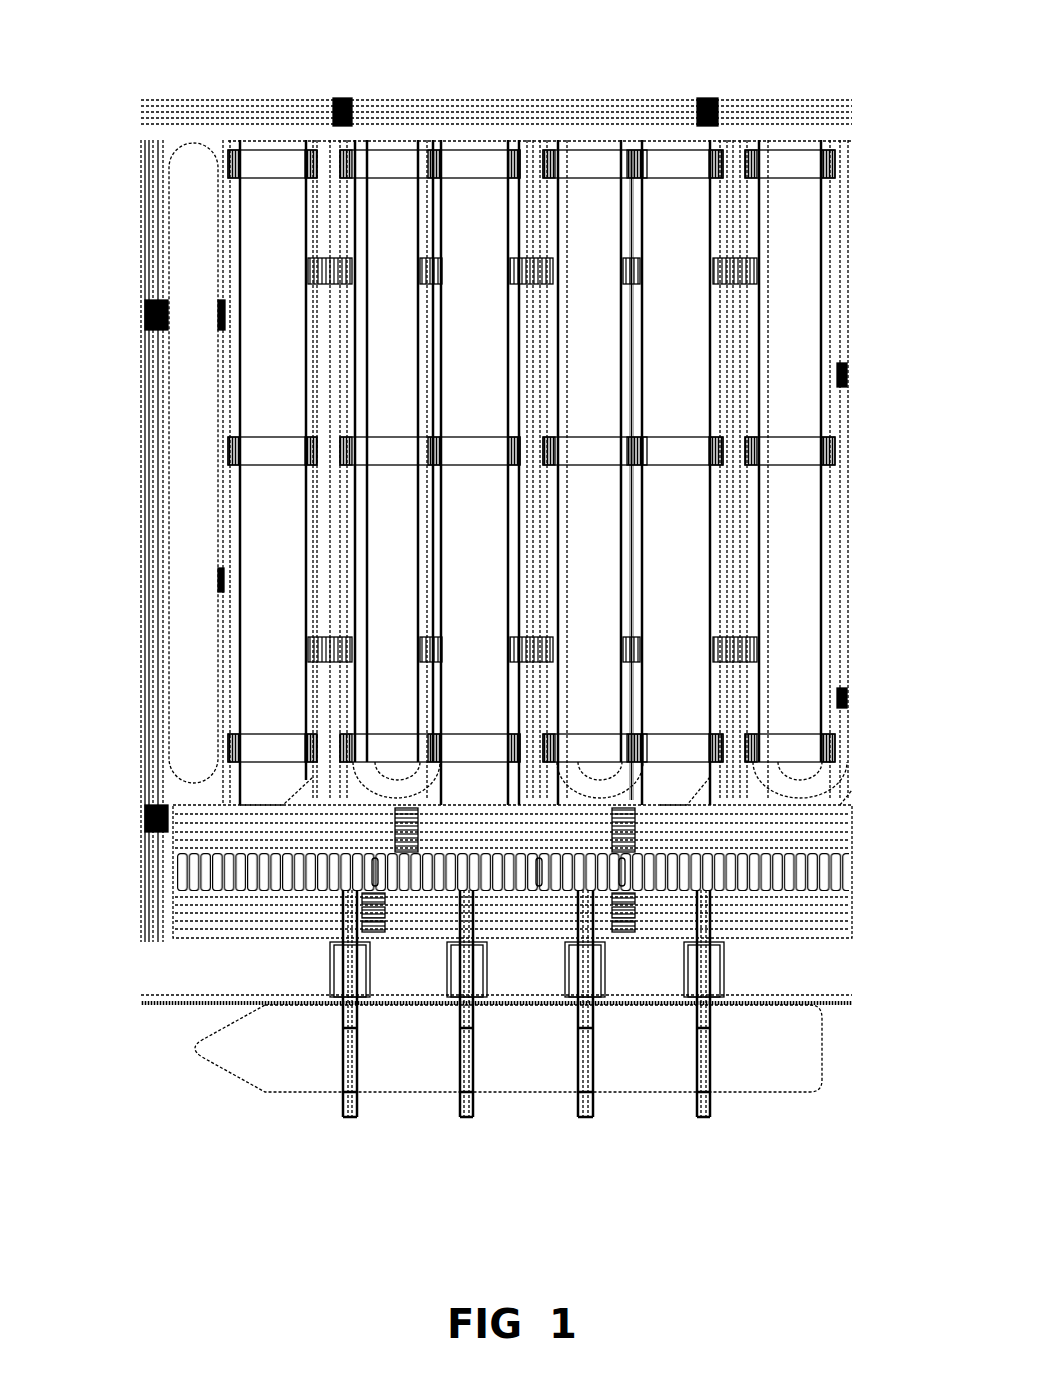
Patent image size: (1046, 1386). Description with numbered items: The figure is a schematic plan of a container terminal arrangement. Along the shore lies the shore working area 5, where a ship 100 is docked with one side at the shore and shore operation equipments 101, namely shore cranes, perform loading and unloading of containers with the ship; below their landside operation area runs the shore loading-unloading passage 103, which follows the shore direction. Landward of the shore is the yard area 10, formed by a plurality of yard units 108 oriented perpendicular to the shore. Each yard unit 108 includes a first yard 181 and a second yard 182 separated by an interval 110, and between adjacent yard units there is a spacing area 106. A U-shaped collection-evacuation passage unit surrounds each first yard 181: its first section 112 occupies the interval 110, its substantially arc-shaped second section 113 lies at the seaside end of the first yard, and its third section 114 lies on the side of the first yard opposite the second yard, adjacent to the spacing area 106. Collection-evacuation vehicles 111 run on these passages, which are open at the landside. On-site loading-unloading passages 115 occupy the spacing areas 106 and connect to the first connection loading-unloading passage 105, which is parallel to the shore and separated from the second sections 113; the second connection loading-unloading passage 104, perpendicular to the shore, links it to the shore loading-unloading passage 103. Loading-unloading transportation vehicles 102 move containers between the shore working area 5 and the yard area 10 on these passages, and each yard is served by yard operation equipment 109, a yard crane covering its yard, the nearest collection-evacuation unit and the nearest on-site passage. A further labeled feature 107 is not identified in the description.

The yard area 10 is at (501, 462).
The shore working area 5 is at (478, 897).
The ship 100 is at (508, 1107).
The shore operation equipment 101 is at (527, 1050).
The loading-unloading transportation vehicle 102 is at (400, 678).
The shore loading-unloading passage 103 is at (446, 941).
The second connection loading-unloading passage 104 is at (446, 890).
The first connection loading-unloading passage 105 is at (446, 837).
The spacing area 106 is at (455, 410).
The return channel 107 is at (645, 410).
The yard unit 108 is at (275, 472).
The yard operation equipment 109 is at (439, 481).
The interval 110 is at (790, 451).
The collection-evacuation vehicle 111 is at (794, 475).
The first section 112 is at (796, 472).
The second section 113 is at (600, 836).
The third section 114 is at (761, 470).
The on-site loading-unloading passage 115 is at (288, 470).
The first yard 181 is at (235, 451).
The second yard 182 is at (259, 472).